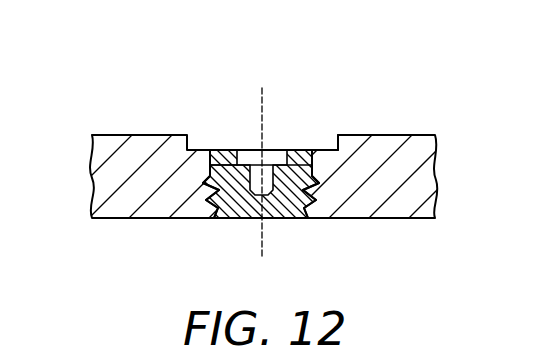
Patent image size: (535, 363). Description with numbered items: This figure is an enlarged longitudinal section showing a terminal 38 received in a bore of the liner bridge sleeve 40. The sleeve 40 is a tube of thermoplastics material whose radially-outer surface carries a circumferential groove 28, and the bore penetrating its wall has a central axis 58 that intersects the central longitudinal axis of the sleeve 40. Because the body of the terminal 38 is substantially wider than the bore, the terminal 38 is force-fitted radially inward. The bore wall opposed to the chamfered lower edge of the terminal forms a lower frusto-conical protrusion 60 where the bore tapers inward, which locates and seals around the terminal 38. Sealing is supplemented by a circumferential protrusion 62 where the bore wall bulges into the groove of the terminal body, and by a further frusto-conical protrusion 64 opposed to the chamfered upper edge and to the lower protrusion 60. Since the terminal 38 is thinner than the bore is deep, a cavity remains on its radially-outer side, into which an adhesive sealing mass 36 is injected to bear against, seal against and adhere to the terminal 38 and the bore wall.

The sleeve 40 is at (396, 95).
The circumferential groove 28 is at (333, 148).
The adhesive sealing mass 36 is at (233, 149).
The frusto-conical protrusion 64 is at (211, 149).
The terminal 38 is at (290, 149).
The lower frusto-conical protrusion 60 is at (211, 219).
The circumferential protrusion 62 is at (321, 219).
The central axis 58 is at (263, 249).